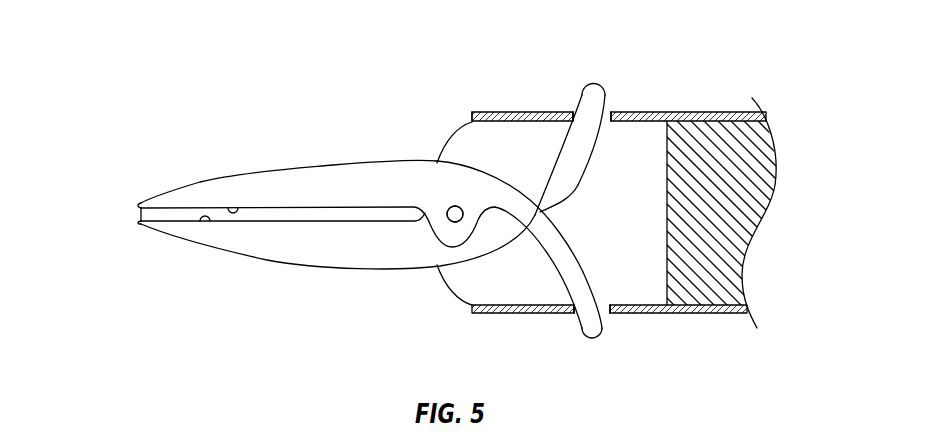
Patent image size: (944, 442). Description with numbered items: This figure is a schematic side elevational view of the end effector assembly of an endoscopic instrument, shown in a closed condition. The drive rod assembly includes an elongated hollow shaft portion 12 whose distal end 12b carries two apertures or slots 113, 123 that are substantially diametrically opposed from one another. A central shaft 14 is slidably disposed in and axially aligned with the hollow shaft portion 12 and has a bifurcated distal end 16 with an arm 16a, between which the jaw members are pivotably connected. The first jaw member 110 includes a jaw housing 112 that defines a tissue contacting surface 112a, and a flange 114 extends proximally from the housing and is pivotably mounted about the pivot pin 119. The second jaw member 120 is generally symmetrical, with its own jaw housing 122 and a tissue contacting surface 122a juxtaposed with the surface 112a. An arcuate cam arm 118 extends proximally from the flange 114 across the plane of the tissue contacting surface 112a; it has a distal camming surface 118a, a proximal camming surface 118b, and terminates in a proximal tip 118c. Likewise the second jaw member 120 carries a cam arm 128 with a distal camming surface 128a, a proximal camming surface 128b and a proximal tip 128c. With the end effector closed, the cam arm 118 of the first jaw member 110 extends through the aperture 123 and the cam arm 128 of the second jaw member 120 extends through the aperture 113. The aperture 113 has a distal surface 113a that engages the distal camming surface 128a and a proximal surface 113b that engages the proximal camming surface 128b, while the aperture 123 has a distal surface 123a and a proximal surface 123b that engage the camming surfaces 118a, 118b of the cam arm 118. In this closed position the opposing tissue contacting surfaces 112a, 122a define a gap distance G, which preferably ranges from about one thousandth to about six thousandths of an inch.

The hollow shaft portion 12 is at (737, 111).
The distal end of hollow shaft portion 12b is at (473, 111).
The central shaft 14 is at (768, 160).
The bifurcated distal end 16 is at (668, 117).
The arm 16a is at (450, 133).
The first jaw member 110 is at (278, 162).
The jaw housing 112 is at (357, 164).
The tissue contacting surface 112a is at (233, 206).
The flange 114 is at (453, 222).
The pivot pin 119 is at (453, 206).
The second jaw member 120 is at (281, 268).
The jaw housing of second jaw member 122 is at (360, 266).
The tissue contacting surface 122a is at (205, 222).
The cam arm 118 is at (567, 253).
The distal camming surface 118a is at (556, 263).
The proximal camming surface 118b is at (588, 273).
The proximal tip 118c is at (598, 339).
The cam arm 128 is at (560, 183).
The distal camming surface 128a is at (553, 164).
The proximal camming surface 128b is at (587, 165).
The proximal tip 128c is at (608, 100).
The aperture 113 is at (612, 104).
The distal surface 113a is at (576, 111).
The proximal surface 113b is at (612, 110).
The aperture 123 is at (606, 318).
The distal surface 123a is at (574, 313).
The proximal surface 123b is at (610, 315).
The gap distance G is at (132, 211).